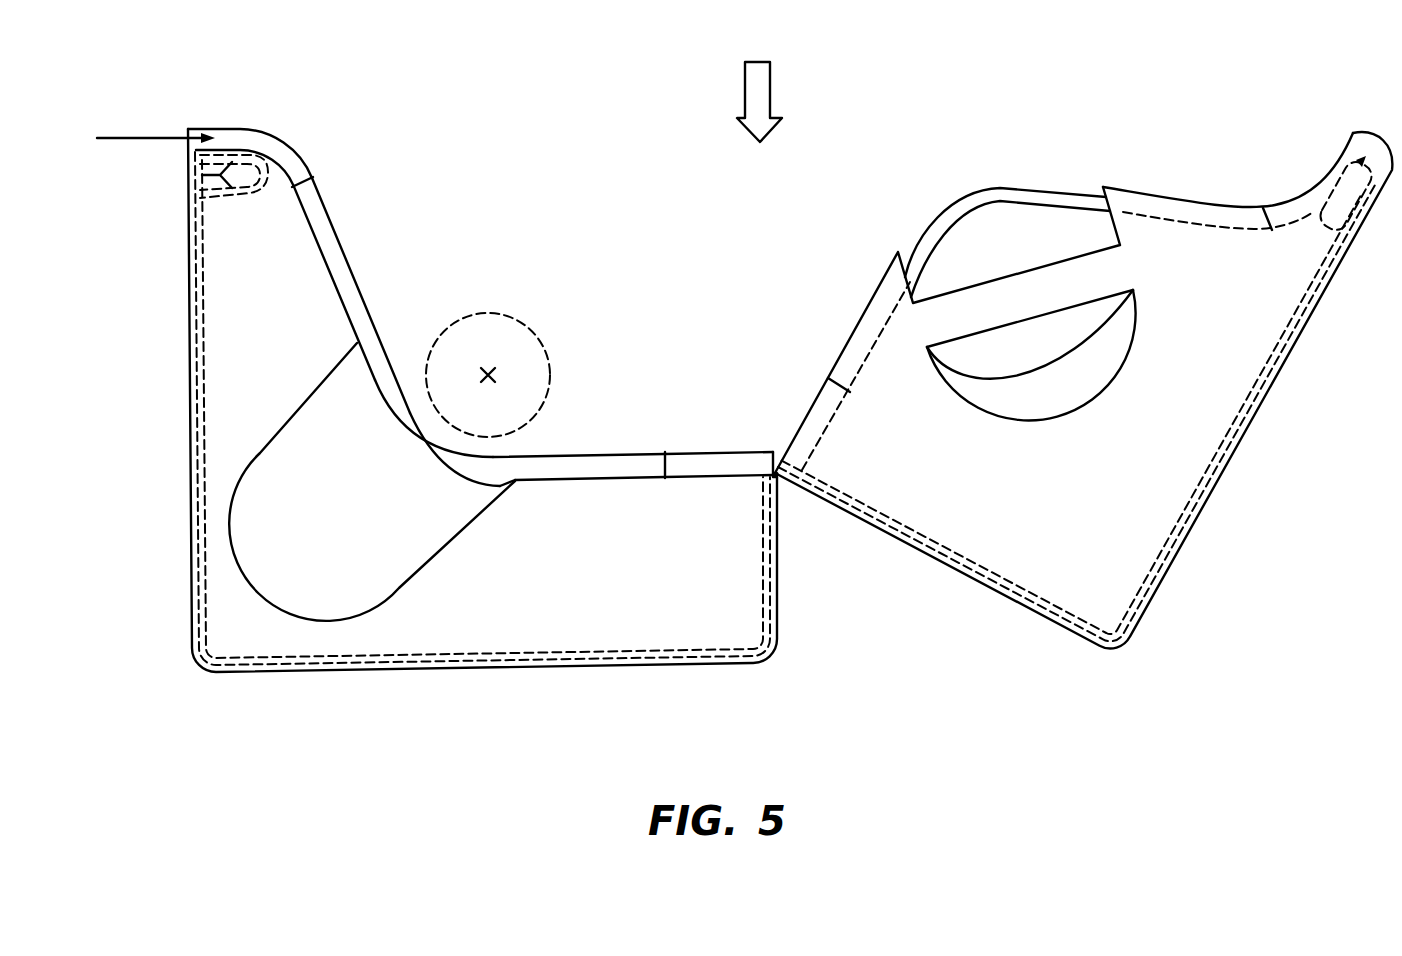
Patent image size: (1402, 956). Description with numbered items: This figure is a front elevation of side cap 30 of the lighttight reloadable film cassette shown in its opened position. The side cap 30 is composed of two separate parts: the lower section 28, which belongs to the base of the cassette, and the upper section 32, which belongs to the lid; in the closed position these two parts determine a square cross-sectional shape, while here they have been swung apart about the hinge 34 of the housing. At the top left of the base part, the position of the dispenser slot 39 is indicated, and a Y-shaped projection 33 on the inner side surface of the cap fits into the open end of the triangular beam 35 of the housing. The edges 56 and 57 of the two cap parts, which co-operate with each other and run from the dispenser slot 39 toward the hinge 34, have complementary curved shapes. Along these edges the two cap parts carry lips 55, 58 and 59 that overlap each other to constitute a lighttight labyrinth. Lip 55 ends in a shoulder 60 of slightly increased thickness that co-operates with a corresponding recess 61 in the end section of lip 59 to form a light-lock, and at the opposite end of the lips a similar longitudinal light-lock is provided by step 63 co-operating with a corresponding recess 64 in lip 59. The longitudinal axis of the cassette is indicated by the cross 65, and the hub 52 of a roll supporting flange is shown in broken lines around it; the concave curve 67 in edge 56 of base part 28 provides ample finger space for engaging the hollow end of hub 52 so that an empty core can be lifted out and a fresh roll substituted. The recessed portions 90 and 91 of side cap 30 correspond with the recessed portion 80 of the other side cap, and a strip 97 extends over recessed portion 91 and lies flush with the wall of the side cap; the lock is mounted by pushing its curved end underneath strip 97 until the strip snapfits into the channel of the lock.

The lower section of side cap 28 is at (508, 635).
The side cap 30 is at (755, 97).
The upper section of side cap 32 is at (1140, 493).
The Y-shaped projection 33 is at (200, 178).
The hinge 34 is at (782, 488).
The triangular beam 35 is at (218, 205).
The dispenser slot 39 is at (128, 138).
The hub 52 is at (520, 312).
The lip 55 is at (607, 460).
The edge 56 is at (375, 263).
The edge 57 is at (1178, 185).
The lip 58 is at (932, 218).
The lip 59 is at (1228, 213).
The shoulder 60 is at (712, 460).
The recess 61 is at (810, 412).
The step 63 is at (297, 168).
The recess 64 is at (1345, 165).
The cross 65 is at (500, 370).
The concave curve 67 is at (396, 360).
The recessed portion 80 is at (490, 478).
The recessed portion 90 is at (262, 553).
The recessed portion 91 is at (1007, 228).
The strip 97 is at (1105, 272).